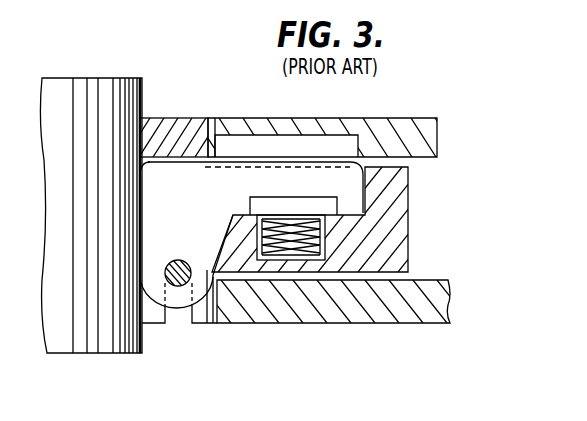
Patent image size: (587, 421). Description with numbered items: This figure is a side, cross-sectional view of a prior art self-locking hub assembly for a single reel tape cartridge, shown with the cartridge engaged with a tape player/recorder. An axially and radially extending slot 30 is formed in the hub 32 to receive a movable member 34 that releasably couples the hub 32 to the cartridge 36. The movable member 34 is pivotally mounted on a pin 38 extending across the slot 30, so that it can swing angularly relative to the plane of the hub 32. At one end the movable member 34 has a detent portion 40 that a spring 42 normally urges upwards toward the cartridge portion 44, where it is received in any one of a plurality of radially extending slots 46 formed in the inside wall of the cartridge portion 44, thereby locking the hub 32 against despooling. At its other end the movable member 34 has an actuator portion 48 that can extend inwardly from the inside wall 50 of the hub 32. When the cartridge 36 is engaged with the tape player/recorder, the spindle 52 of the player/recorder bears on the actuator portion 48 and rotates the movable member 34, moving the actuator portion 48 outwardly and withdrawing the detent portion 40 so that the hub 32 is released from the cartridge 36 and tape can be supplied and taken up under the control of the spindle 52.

The slot 30 is at (153, 160).
The hub 32 is at (237, 108).
The movable member 34 is at (208, 321).
The cartridge 36 is at (460, 294).
The pin 38 is at (178, 261).
The detent portion 40 is at (350, 180).
The spring 42 is at (287, 258).
The cartridge portion 44 is at (428, 133).
The radially extending slots 46 is at (328, 147).
The actuator portion 48 is at (146, 171).
The inside wall 50 is at (148, 128).
The spindle 52 is at (58, 87).